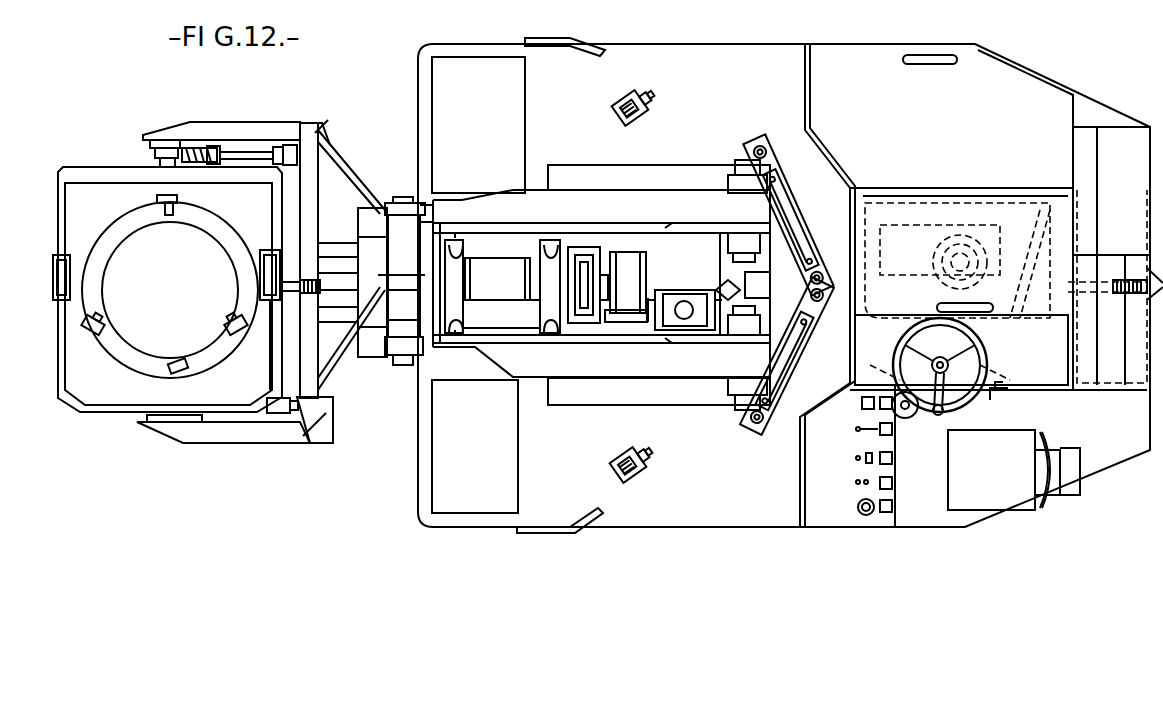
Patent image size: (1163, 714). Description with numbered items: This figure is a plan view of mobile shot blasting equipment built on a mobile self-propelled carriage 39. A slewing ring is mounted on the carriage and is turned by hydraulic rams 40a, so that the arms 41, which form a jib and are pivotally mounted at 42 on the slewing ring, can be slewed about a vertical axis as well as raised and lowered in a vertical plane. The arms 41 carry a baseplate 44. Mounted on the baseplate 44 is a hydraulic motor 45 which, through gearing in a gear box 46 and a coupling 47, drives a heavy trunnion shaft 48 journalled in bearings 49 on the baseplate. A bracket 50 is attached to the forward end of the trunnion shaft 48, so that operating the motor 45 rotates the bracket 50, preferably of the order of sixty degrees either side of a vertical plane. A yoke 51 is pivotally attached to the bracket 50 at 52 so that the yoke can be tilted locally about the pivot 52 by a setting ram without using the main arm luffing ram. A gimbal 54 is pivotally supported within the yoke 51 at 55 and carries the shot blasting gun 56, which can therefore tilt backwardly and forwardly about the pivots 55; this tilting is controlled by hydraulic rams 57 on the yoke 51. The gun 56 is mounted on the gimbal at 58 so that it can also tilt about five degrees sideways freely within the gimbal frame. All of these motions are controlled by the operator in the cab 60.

The mobile self-propelled carriage 39 is at (742, 68).
The hydraulic rams 40a is at (788, 227).
The arms 41 is at (693, 178).
The pivot 42 is at (755, 172).
The baseplate 44 is at (697, 274).
The hydraulic motor 45 is at (684, 312).
The gear box 46 is at (627, 260).
The coupling 47 is at (580, 265).
The trunnion shaft 48 is at (499, 284).
The bearings 49 is at (533, 257).
The bracket 50 is at (408, 325).
The yoke 51 is at (291, 135).
The pivot 52 is at (401, 197).
The gimbal 54 is at (112, 175).
The pivots 55 is at (167, 150).
The shot blasting gun 56 is at (186, 281).
The hydraulic rams 57 is at (226, 152).
The gun mounting 58 is at (56, 283).
The cab 60 is at (1090, 422).